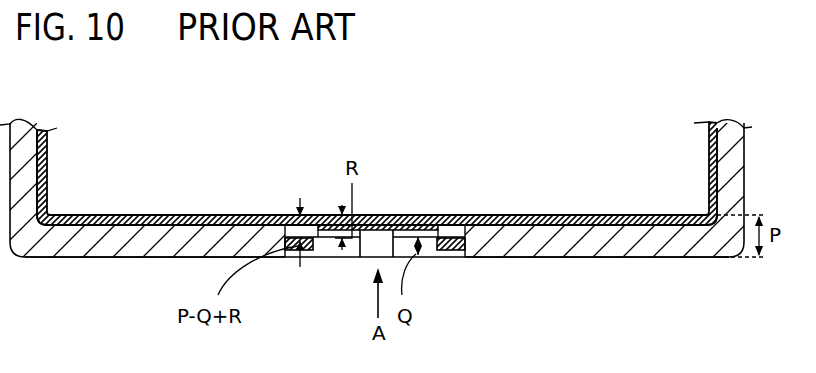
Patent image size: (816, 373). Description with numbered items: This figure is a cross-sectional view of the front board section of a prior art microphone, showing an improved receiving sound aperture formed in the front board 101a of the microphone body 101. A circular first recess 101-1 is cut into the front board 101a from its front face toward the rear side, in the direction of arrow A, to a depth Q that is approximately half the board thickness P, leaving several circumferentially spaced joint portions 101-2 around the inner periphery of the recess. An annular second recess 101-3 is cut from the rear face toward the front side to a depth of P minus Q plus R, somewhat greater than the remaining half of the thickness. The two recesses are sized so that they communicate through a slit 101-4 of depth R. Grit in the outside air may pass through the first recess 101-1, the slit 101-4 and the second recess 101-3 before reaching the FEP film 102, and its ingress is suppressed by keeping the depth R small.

The front board 101 is at (786, 159).
The front board 101a is at (105, 250).
The first recess 101-1 is at (322, 237).
The joint portions 101-2 is at (383, 247).
The second recess 101-3 is at (308, 213).
The slit 101-4 is at (341, 239).
The FEP film 102 is at (417, 213).